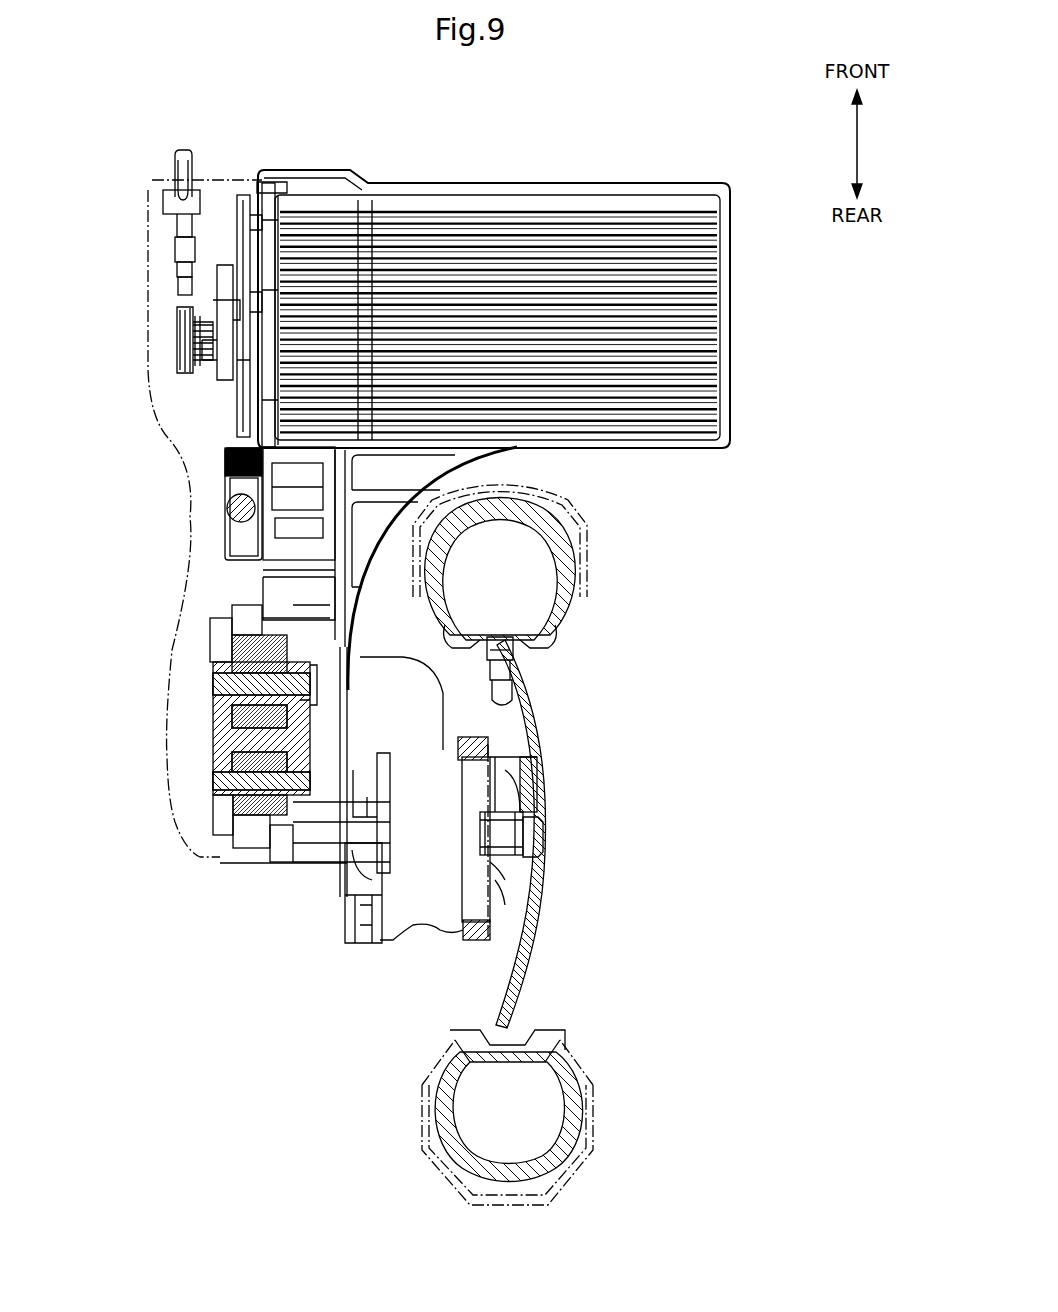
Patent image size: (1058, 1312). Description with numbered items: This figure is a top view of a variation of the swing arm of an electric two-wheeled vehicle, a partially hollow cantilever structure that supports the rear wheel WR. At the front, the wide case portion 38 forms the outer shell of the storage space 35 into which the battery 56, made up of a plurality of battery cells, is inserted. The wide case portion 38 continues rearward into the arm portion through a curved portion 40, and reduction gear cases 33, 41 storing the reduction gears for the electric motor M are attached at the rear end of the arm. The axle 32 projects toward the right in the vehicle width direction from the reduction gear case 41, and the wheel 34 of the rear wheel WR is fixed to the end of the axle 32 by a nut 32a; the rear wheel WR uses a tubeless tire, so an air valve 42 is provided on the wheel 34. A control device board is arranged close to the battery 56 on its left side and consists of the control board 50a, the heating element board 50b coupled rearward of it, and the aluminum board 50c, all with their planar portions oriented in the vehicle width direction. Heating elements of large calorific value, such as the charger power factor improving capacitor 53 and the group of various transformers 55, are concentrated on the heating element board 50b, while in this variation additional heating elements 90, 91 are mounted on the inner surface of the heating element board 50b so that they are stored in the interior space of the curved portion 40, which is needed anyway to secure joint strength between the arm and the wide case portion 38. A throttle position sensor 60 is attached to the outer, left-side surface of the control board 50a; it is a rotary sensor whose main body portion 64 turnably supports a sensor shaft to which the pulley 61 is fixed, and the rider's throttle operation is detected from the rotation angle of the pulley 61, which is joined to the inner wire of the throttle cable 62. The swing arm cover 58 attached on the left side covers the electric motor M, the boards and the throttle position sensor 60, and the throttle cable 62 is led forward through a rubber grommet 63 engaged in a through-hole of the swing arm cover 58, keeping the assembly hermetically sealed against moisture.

The battery 56 is at (693, 240).
The storage space 35 is at (327, 190).
The control board 50a is at (243, 243).
The aluminum board 50c is at (253, 202).
The throttle cable 62 is at (173, 163).
The grommet 63 is at (168, 193).
The throttle position sensor 60 is at (183, 287).
The pulley 61 is at (177, 313).
The main body portion 64 is at (222, 375).
The charger power factor improving capacitor 53 is at (225, 455).
The group of various transformers 55 is at (237, 530).
The heating element 90 is at (305, 477).
The heating element board 50b is at (270, 543).
The heating element 91 is at (298, 530).
The wide case portion 38 is at (658, 447).
The electric motor M is at (208, 775).
The swing arm cover 58 is at (168, 820).
The reduction gear case 33 is at (348, 897).
The reduction gear case 41 is at (417, 923).
The wheel 34 is at (543, 753).
The nut 32a is at (537, 837).
The axle 32 is at (503, 857).
The curved portion 40 is at (383, 533).
The air valve 42 is at (518, 672).
The rear wheel WR is at (560, 1157).